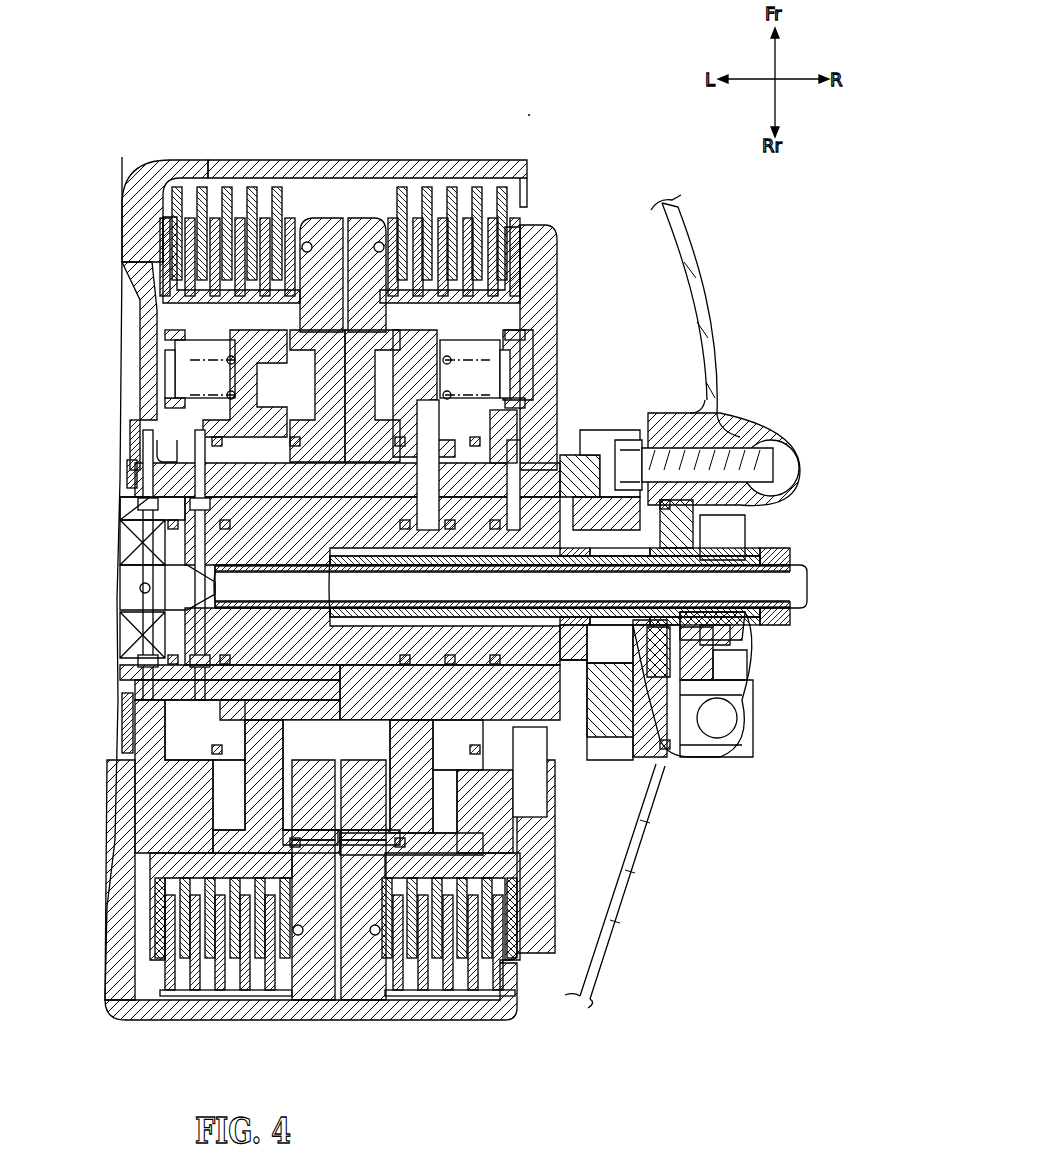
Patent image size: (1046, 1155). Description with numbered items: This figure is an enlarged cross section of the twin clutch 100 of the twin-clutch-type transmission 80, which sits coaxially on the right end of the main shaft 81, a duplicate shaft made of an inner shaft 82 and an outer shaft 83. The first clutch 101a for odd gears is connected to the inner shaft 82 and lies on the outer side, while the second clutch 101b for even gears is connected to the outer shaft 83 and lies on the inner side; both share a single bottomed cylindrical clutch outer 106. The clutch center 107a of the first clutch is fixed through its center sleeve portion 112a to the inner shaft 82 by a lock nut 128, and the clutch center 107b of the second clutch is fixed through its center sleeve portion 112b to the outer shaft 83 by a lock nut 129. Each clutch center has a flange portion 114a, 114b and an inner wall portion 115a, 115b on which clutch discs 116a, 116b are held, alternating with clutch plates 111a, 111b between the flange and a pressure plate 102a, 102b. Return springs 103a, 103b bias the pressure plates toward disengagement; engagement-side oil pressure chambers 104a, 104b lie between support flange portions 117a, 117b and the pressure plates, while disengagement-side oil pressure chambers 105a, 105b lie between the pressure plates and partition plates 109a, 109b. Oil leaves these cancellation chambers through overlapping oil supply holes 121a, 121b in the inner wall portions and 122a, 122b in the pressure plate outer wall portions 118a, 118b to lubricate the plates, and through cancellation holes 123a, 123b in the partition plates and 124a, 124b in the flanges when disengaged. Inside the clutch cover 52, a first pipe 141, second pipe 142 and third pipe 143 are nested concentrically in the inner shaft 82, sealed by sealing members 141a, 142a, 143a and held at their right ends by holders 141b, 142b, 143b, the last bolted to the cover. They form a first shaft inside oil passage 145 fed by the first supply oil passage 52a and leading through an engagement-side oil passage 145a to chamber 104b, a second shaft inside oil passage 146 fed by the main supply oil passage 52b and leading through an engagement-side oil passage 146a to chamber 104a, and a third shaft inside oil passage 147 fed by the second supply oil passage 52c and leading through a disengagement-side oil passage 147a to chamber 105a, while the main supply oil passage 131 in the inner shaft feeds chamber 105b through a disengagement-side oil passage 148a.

The twin-clutch-type transmission 80 is at (528, 118).
The twin clutch 100 is at (343, 125).
The first clutch 101a is at (538, 222).
The second clutch 101b is at (328, 222).
The pressure plate 102a is at (360, 985).
The pressure plate 102b is at (300, 985).
The return spring 103a is at (520, 372).
The return spring 103b is at (200, 372).
The engagement-side oil pressure chamber 104a is at (380, 380).
The engagement-side oil pressure chamber 104b is at (285, 412).
The disengagement-side oil pressure chamber 105a is at (500, 400).
The disengagement-side oil pressure chamber 105b is at (205, 396).
The clutch outer 106 is at (328, 1012).
The clutch center 107a is at (540, 800).
The clutch center 107b is at (140, 815).
The partition plate 109a is at (540, 378).
The partition plate 109b is at (165, 375).
The clutch plates 111a is at (445, 990).
The clutch plates 111b is at (270, 990).
The center sleeve portion 112a is at (535, 740).
The center sleeve portion 112b is at (190, 676).
The flange portion 114a is at (545, 950).
The flange portion 114b is at (128, 932).
The inner wall portion 115a is at (490, 905).
The inner wall portion 115b is at (215, 900).
The clutch discs 116a is at (510, 990).
The clutch discs 116b is at (183, 990).
The support flange portion 117a is at (500, 825).
The support flange portion 117b is at (240, 790).
The outer wall portion 118a is at (510, 870).
The outer wall portion 118b is at (200, 860).
The oil supply hole 121a is at (408, 188).
The oil supply hole 121b is at (258, 188).
The oil supply hole 122a is at (430, 222).
The oil supply hole 122b is at (288, 218).
The cancellation hole 123a is at (490, 358).
The cancellation hole 123b is at (195, 350).
The cancellation hole 124a is at (520, 330).
The cancellation hole 124b is at (183, 335).
The lock nut 128 is at (600, 690).
The lock nut 129 is at (335, 715).
The main supply oil passage 131 is at (130, 574).
The first pipe 141 is at (283, 568).
The sealing member 141a is at (335, 603).
The holder 141b is at (760, 552).
The second pipe 142 is at (425, 562).
The sealing member 142a is at (485, 568).
The holder 142b is at (740, 528).
The third pipe 143 is at (658, 562).
The sealing member 143a is at (598, 562).
The holder 143b is at (740, 440).
The first shaft inside oil passage 145 is at (232, 586).
The engagement-side oil passage 145a is at (165, 470).
The second shaft inside oil passage 146 is at (373, 568).
The engagement-side oil passage 146a is at (520, 440).
The third shaft inside oil passage 147 is at (560, 568).
The disengagement-side oil passage 147a is at (520, 455).
The disengagement-side oil passage 148a is at (140, 450).
The main shaft 81 is at (70, 490).
The inner shaft 82 is at (130, 540).
The outer shaft 83 is at (125, 490).
The clutch cover 52 is at (598, 982).
The first supply oil passage 52a is at (755, 625).
The main supply oil passage 52b is at (730, 662).
The second supply oil passage 52c is at (725, 718).